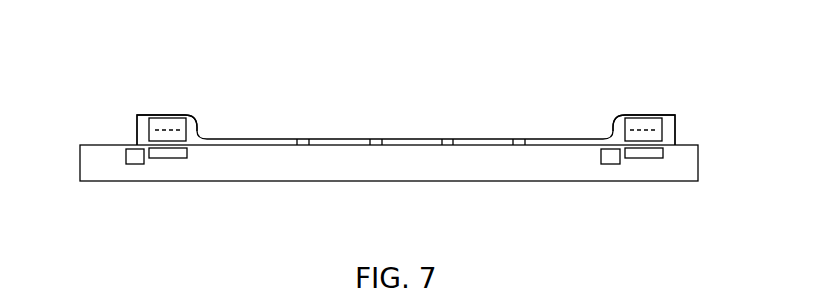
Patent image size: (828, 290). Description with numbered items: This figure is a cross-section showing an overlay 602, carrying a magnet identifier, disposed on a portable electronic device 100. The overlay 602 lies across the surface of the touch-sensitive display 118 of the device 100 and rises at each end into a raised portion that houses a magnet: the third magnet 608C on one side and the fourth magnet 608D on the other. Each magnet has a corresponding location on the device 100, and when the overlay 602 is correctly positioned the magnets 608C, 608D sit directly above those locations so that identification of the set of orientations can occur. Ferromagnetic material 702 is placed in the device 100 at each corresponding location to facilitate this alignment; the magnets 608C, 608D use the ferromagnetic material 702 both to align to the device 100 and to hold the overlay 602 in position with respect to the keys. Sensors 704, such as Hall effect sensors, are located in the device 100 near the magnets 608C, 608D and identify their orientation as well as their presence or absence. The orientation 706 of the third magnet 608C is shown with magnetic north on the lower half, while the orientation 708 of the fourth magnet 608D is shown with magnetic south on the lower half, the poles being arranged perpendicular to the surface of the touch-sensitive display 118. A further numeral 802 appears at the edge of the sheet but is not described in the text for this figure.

The portable electronic device 100 is at (458, 182).
The touch-sensitive display 118 is at (262, 145).
The overlay 602 is at (413, 139).
The third magnet 608C is at (647, 121).
The fourth magnet 608D is at (166, 120).
The ferromagnetic material 702 is at (173, 158).
The sensors 704 is at (133, 165).
The orientation 706 is at (655, 123).
The orientation 708 is at (157, 123).
The reference numeral 802 is at (765, 282).